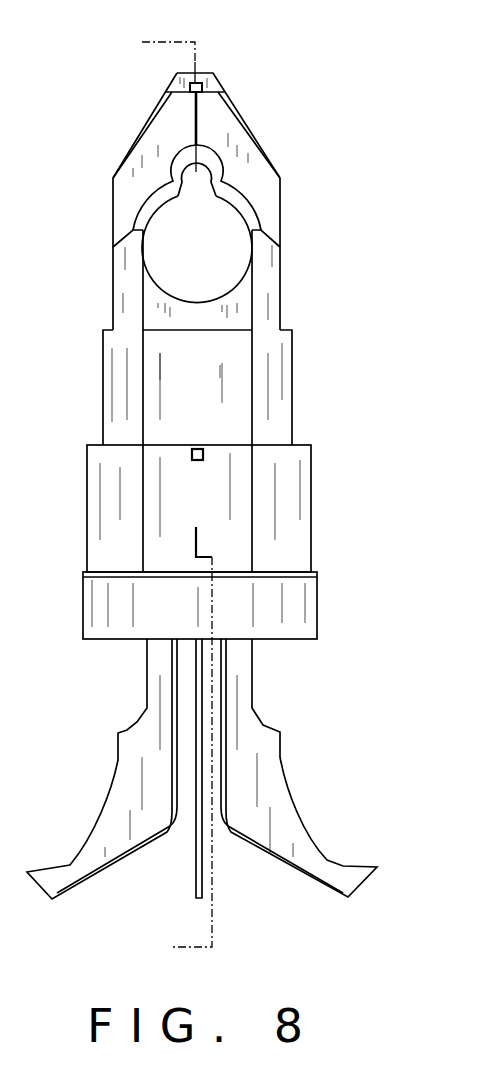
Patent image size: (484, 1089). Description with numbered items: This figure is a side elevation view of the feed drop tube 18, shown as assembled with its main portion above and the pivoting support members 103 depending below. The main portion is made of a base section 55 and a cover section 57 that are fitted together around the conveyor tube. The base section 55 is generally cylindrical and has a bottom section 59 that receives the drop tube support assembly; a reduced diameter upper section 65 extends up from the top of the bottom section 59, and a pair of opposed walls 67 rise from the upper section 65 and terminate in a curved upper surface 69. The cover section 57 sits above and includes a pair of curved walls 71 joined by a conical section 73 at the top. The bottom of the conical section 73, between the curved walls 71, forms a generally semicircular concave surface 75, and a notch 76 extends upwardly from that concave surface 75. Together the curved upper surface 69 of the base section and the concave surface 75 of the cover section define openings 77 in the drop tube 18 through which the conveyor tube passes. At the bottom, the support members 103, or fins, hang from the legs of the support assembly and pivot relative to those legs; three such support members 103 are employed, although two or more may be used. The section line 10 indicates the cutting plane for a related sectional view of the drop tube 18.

The section line 10 is at (132, 42).
The feed drop tube 18 is at (307, 312).
The base section 55 is at (230, 490).
The cover section 57 is at (295, 382).
The bottom section 59 is at (208, 510).
The upper section 65 is at (207, 413).
The opposed walls 67 is at (208, 316).
The curved upper surface 69 is at (167, 290).
The curved walls 71 is at (112, 298).
The conical section 73 is at (257, 105).
The concave surface 75 is at (163, 193).
The notch 76 is at (208, 176).
The openings 77 is at (228, 243).
The support members 103 is at (303, 808).